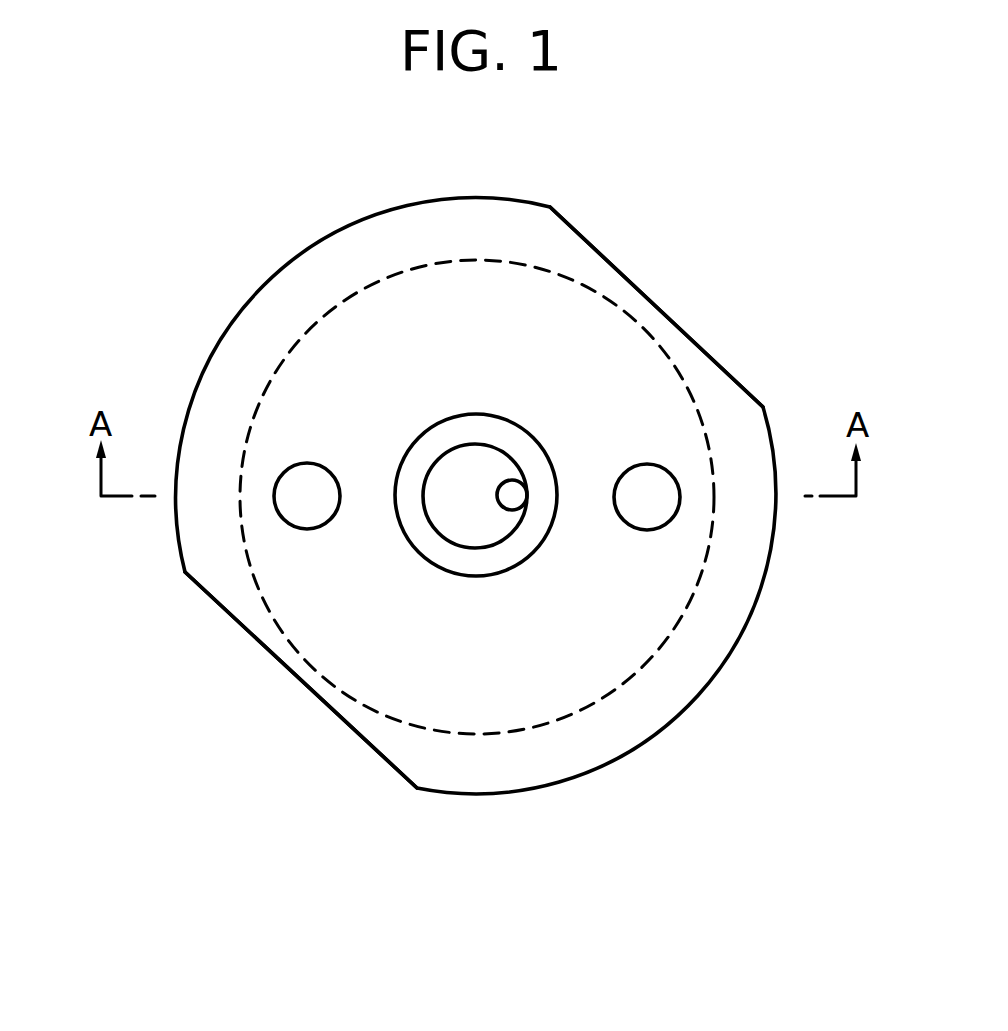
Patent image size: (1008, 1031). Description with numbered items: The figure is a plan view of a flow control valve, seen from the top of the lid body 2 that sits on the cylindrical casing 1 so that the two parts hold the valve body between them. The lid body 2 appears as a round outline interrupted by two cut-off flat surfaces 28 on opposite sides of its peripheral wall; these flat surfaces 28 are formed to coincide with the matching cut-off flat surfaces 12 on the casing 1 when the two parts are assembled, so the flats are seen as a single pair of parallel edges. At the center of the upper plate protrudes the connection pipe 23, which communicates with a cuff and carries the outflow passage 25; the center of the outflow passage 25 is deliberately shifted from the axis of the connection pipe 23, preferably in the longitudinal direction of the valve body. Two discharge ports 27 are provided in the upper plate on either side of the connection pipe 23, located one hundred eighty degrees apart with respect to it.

The cylindrical casing 1 is at (476, 541).
The lid body 2 is at (667, 752).
The cut-off flat surfaces 12 is at (539, 506).
The connection pipe 23 is at (468, 467).
The outflow passage 25 is at (508, 492).
The discharge ports 27 is at (295, 506).
The cut-off flat surfaces 28 is at (728, 369).